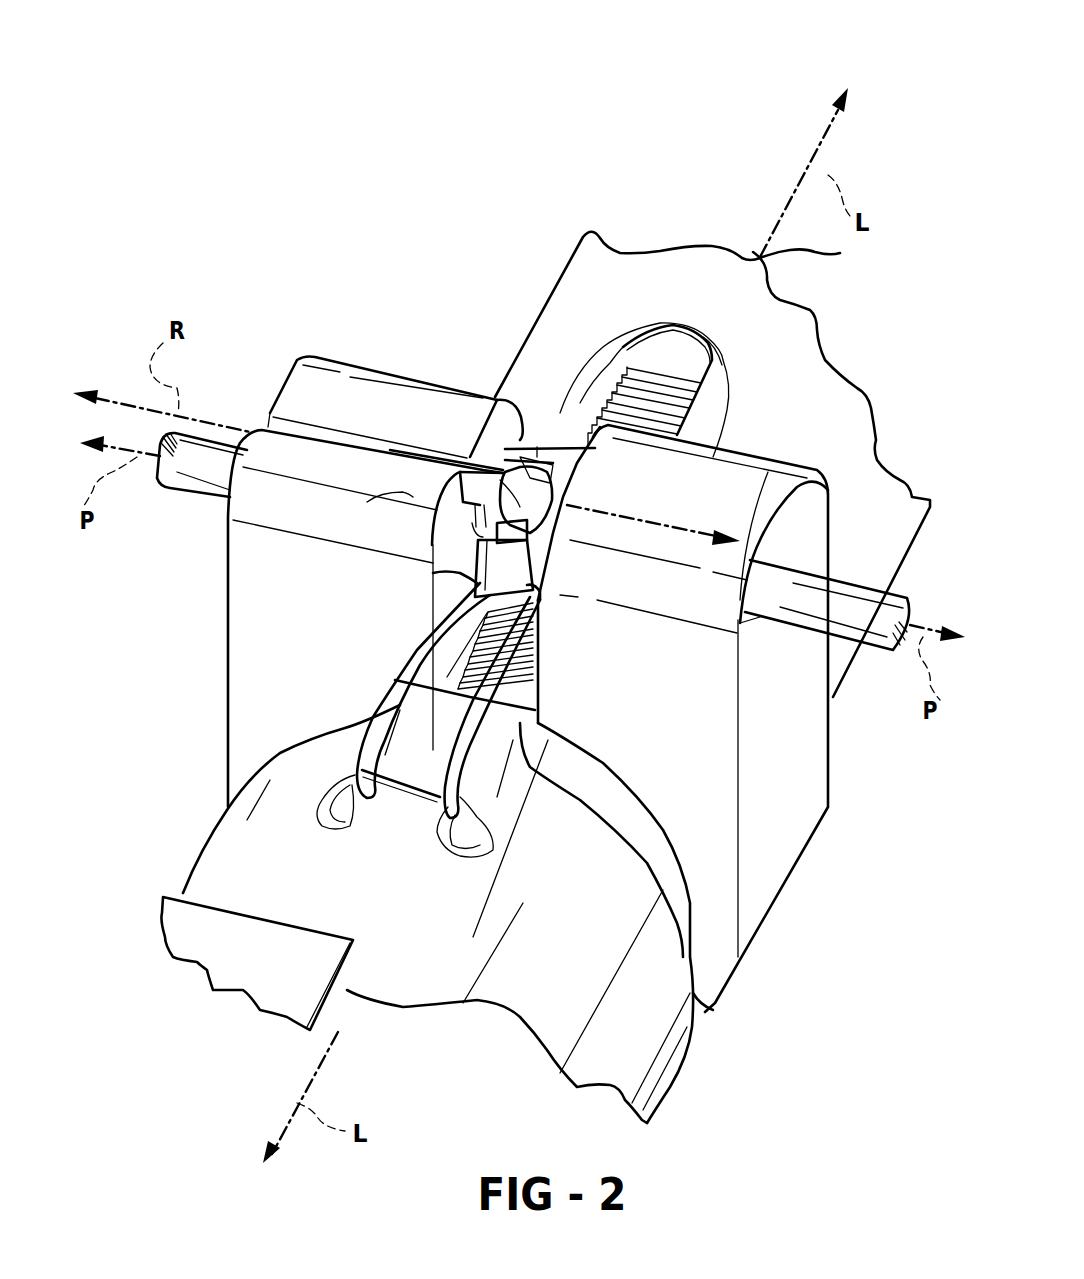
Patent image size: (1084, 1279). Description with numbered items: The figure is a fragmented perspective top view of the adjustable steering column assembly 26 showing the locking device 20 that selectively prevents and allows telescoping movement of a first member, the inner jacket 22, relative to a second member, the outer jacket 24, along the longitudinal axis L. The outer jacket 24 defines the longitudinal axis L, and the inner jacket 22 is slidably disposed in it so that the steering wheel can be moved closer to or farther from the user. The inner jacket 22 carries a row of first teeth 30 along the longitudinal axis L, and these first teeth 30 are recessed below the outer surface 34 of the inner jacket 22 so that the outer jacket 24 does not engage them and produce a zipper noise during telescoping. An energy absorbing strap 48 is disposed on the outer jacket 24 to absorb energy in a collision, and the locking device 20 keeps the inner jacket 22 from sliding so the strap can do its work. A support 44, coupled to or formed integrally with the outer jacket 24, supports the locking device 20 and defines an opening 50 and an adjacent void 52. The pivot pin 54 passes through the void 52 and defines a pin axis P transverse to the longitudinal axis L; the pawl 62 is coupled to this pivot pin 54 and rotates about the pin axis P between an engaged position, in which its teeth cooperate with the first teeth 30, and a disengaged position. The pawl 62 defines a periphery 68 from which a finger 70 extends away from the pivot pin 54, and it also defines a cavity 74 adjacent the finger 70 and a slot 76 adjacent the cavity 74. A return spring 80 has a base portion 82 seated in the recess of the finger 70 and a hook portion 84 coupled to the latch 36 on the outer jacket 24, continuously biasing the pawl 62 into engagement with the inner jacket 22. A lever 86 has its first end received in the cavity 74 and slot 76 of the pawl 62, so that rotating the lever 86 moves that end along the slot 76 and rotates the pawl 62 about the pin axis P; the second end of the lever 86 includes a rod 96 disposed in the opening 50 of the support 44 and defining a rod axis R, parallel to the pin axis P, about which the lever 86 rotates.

The locking device 20 is at (215, 518).
The inner jacket 22 is at (712, 275).
The outer jacket 24 is at (647, 1055).
The adjustable steering column assembly 26 is at (523, 148).
The first teeth 30 is at (662, 393).
The outer surface 34 is at (723, 397).
The latch 36 is at (402, 767).
The support 44 is at (765, 478).
The energy absorbing strap 48 is at (253, 925).
The opening 50 is at (303, 433).
The void 52 is at (767, 623).
The pivot pin 54 is at (857, 587).
The pawl 62 is at (450, 533).
The periphery 68 is at (487, 437).
The finger 70 is at (530, 622).
The cavity 74 is at (553, 447).
The slot 76 is at (550, 522).
The return spring 80 is at (400, 663).
The base portion 82 is at (540, 592).
The hook portion 84 is at (367, 820).
The lever 86 is at (374, 507).
The rod 96 is at (417, 440).